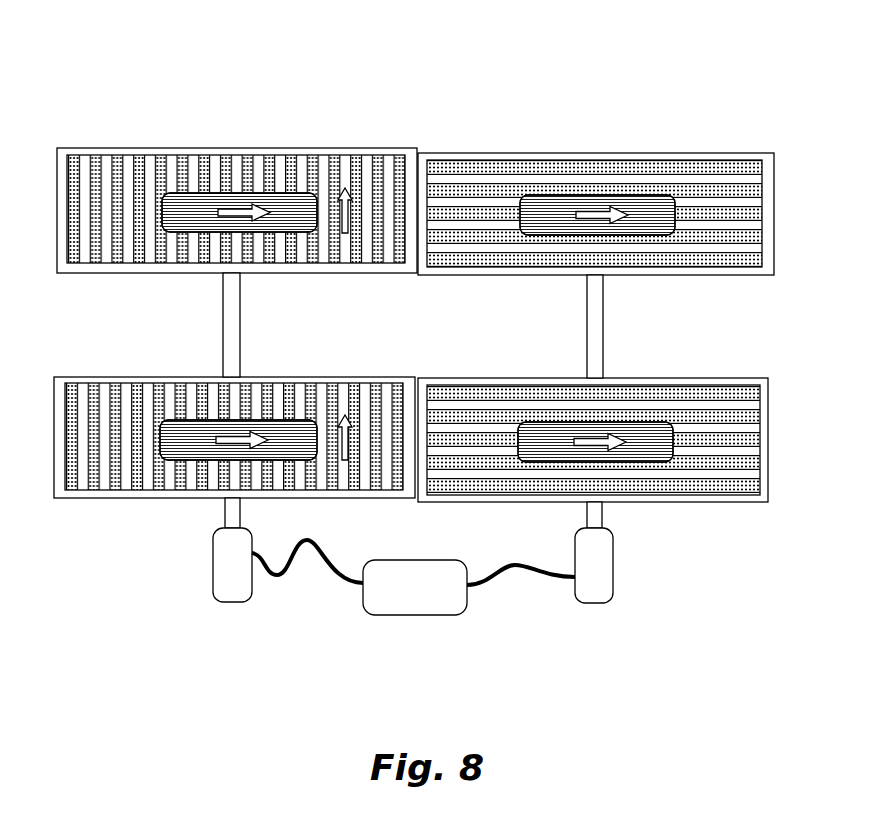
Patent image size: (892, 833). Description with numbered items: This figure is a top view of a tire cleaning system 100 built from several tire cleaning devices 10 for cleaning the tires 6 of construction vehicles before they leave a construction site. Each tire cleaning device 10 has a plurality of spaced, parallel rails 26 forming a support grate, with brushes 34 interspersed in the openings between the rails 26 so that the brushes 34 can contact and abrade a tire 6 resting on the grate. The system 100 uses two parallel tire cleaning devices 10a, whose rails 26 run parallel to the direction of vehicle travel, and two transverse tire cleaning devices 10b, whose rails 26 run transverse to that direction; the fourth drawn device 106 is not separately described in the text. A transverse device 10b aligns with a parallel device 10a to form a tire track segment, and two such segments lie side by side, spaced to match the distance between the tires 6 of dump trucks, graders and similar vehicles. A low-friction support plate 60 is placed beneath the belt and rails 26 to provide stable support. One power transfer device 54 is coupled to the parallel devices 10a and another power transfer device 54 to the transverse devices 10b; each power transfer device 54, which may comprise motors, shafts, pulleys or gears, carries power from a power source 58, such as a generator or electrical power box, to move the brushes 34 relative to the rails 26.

The tire cleaning system 100 is at (252, 80).
The transducer unit 106 is at (137, 153).
The tire cleaning device 10 is at (684, 153).
The parallel tire cleaning device 10a is at (701, 502).
The transverse tire cleaning device 10b is at (134, 498).
The tire 6 is at (290, 205).
The rail 26 is at (124, 263).
The brush 34 is at (97, 162).
The support plate 60 is at (233, 325).
The power transfer device 54 is at (236, 598).
The power source 58 is at (434, 606).